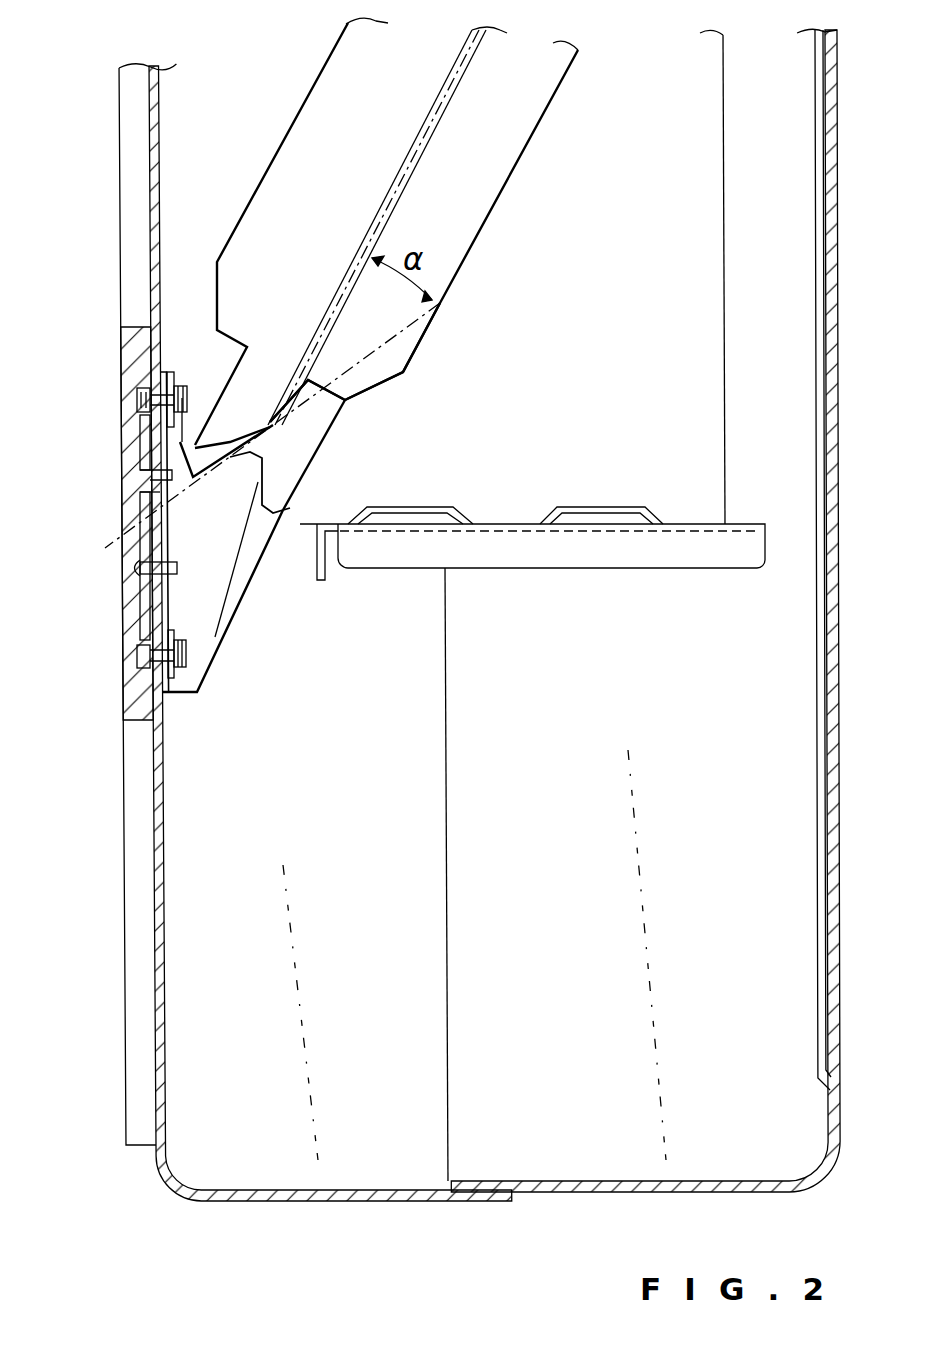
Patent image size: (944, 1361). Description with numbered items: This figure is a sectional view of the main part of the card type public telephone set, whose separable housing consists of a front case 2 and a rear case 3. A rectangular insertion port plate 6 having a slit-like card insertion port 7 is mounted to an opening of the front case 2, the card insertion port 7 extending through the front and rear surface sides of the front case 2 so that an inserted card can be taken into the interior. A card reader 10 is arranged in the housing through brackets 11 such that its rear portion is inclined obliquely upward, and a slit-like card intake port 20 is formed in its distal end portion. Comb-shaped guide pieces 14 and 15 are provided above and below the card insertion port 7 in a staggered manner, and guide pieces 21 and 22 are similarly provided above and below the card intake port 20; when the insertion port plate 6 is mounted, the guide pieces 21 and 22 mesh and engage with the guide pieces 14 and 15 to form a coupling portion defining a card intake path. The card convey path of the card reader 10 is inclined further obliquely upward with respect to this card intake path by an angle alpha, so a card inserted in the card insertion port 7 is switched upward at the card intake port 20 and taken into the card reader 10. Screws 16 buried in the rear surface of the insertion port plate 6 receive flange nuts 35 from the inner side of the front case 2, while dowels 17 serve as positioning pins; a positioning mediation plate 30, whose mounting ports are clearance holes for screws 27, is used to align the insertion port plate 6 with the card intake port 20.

The front case 2 is at (415, 1203).
The rear case 3 is at (538, 1193).
The insertion port plate 6 is at (120, 350).
The card insertion port 7 is at (224, 520).
The card reader 10 is at (533, 137).
The brackets 11 is at (585, 568).
The guide pieces 14 is at (204, 396).
The guide pieces 15 is at (237, 596).
The screws 16 is at (143, 394).
The dowels 17 is at (140, 455).
The card intake port 20 is at (257, 437).
The guide pieces 21 is at (208, 396).
The guide pieces 22 is at (300, 486).
The screws 27 is at (222, 600).
The positioning mediation plate 30 is at (172, 325).
The flange nuts 35 is at (128, 358).